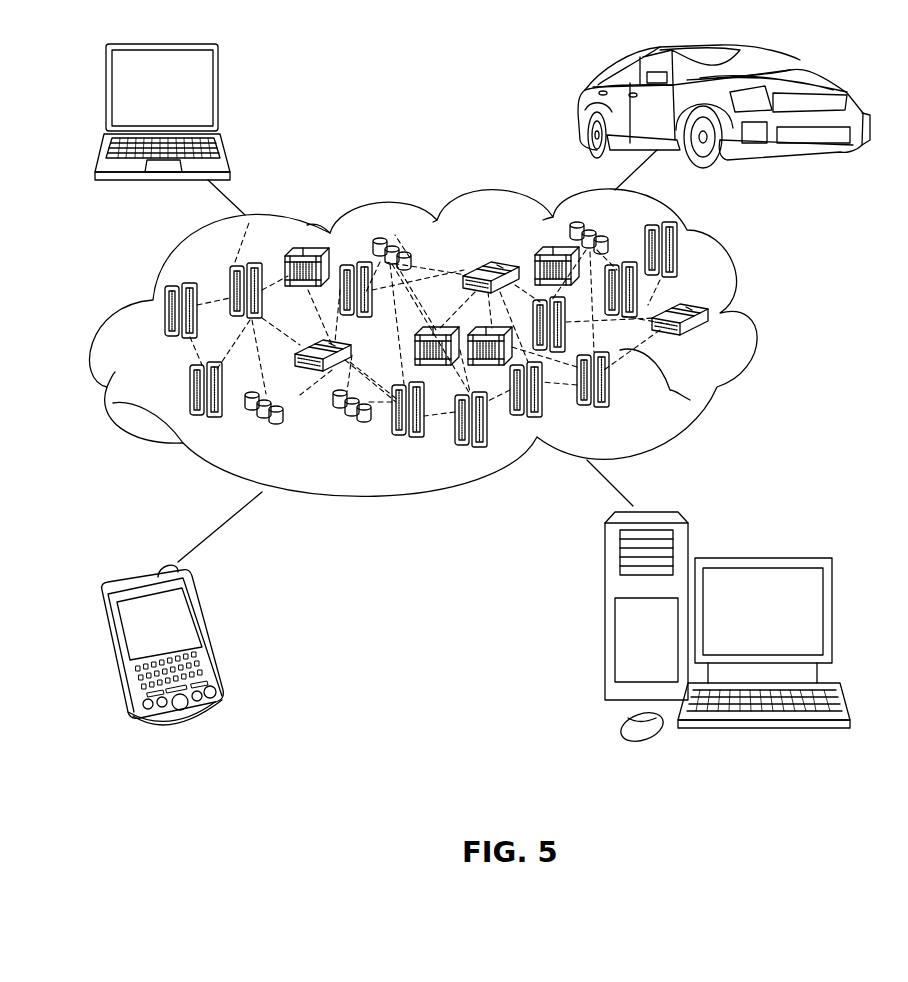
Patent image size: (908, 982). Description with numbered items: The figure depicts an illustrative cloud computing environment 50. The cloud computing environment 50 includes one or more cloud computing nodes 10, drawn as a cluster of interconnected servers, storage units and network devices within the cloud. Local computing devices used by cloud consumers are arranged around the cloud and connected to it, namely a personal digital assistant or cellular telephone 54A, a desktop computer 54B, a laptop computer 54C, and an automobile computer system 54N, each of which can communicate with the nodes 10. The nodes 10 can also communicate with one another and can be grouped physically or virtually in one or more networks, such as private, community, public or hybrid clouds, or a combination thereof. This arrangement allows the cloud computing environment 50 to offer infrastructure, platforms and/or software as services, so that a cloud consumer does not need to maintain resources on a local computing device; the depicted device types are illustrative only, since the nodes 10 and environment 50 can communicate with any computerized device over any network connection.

The cloud computing nodes 10 is at (716, 344).
The cloud computing environment 50 is at (762, 320).
The personal digital assistant or cellular telephone 54A is at (212, 637).
The desktop computer 54B is at (760, 557).
The laptop computer 54C is at (218, 96).
The automobile computer system 54N is at (582, 108).